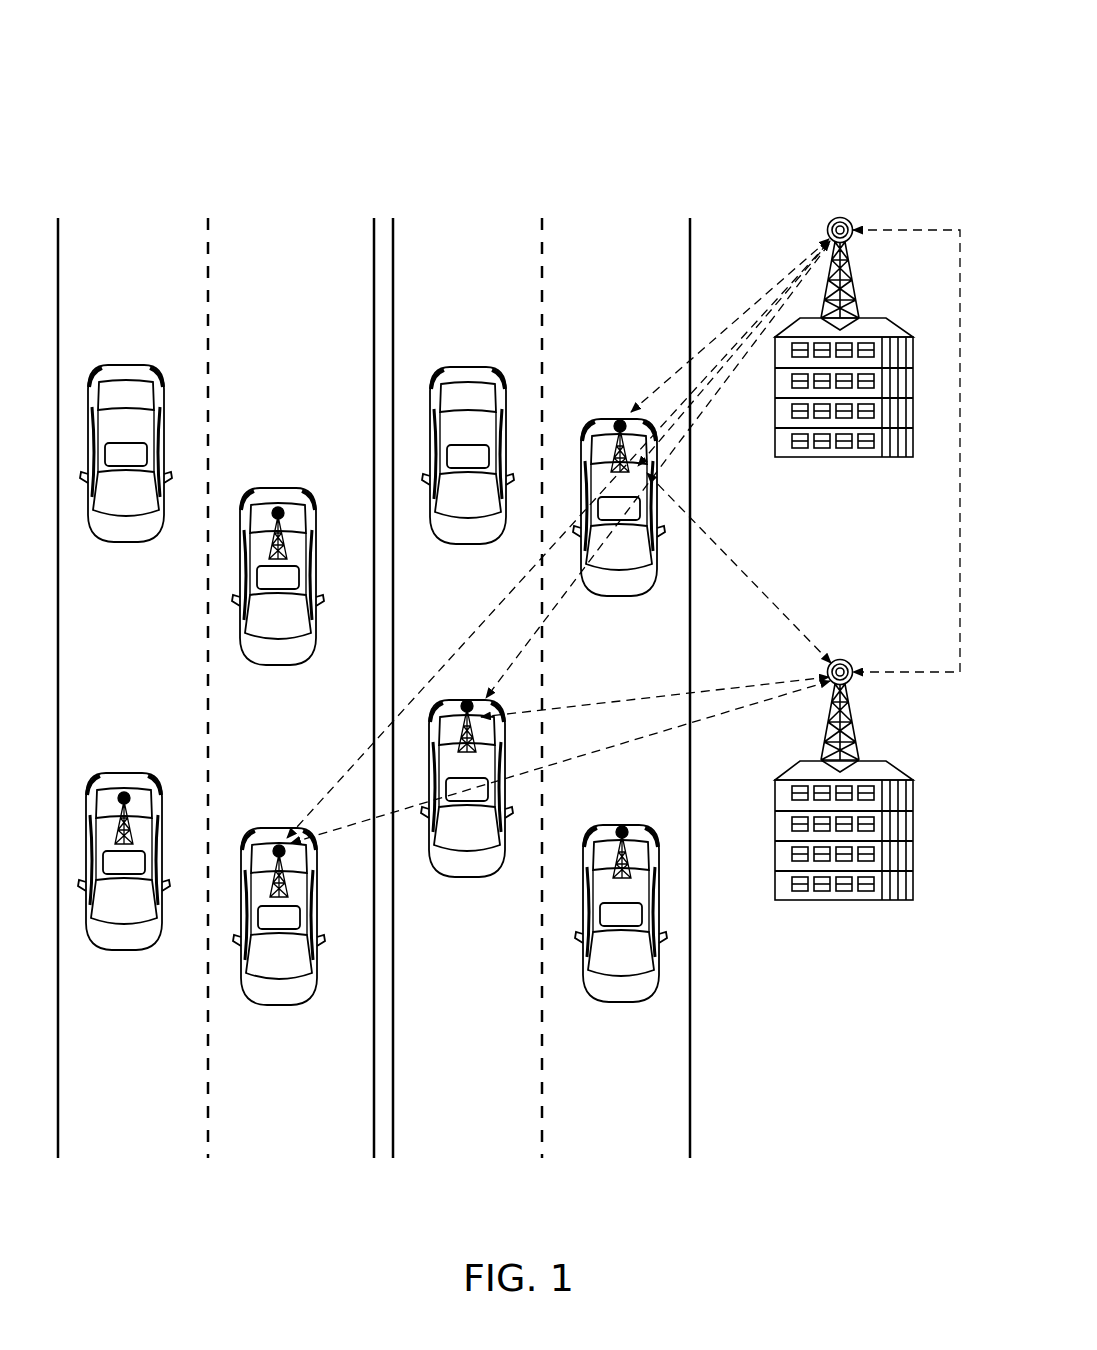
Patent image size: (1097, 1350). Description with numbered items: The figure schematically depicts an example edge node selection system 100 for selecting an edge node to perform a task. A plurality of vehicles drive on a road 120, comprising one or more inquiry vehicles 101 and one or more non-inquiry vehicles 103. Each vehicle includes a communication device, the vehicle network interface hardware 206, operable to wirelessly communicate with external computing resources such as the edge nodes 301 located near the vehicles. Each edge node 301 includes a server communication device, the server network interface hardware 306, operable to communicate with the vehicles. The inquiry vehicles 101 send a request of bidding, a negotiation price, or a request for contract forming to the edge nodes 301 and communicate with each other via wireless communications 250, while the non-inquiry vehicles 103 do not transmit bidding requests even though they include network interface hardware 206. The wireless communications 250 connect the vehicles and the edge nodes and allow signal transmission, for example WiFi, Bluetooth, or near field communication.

The edge node selection system 100 is at (590, 88).
The road 120 is at (368, 170).
The non-inquiry vehicle 103 is at (117, 364).
The inquiry vehicle 101 is at (614, 418).
The vehicle network interface hardware 206 is at (126, 792).
The server network interface hardware 306 is at (843, 217).
The edge node 301 is at (888, 318).
The wireless communications 250 is at (959, 228).